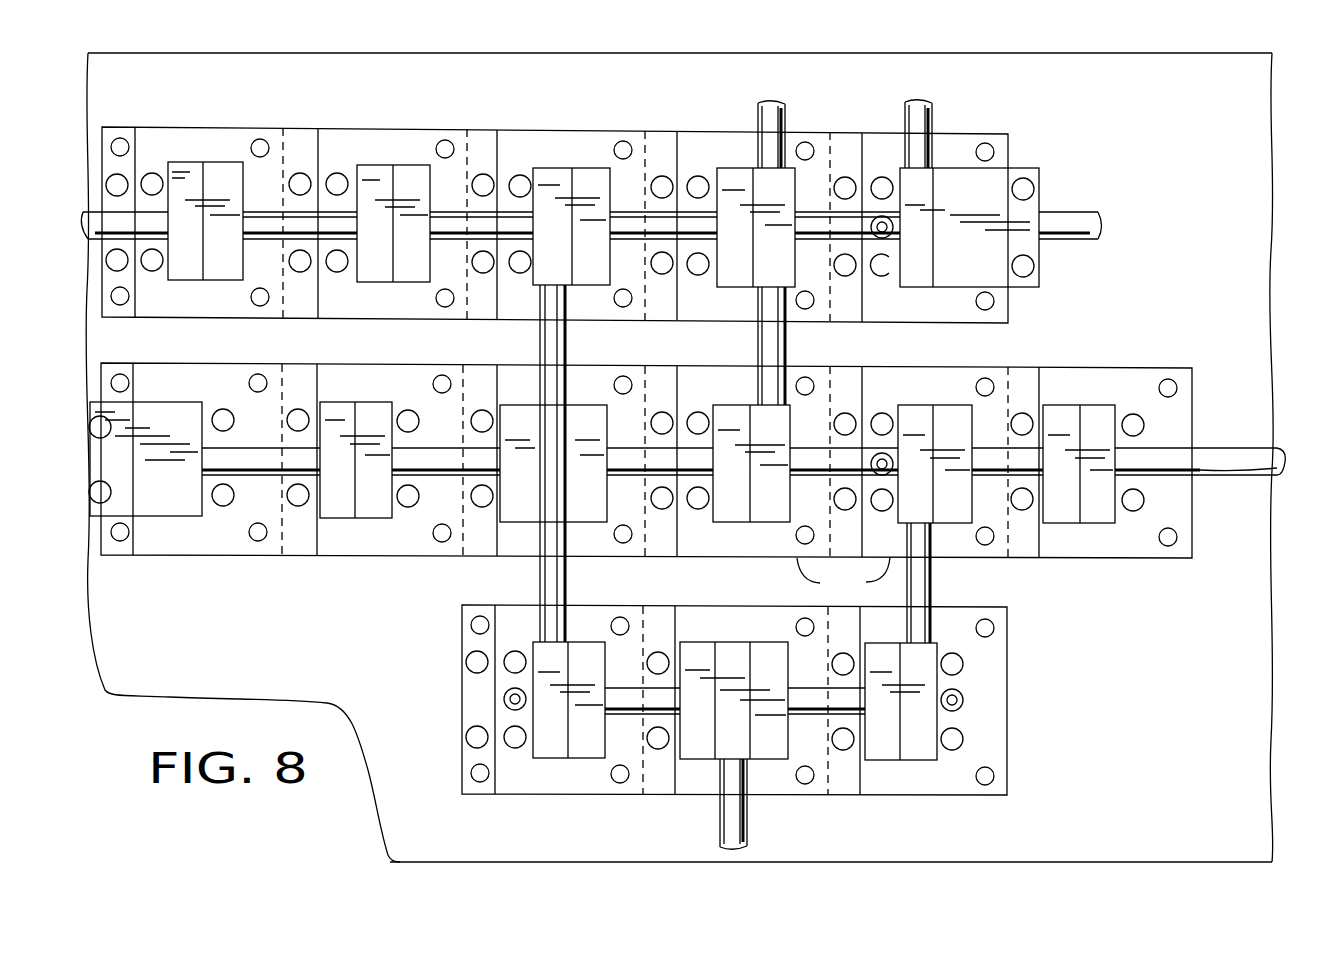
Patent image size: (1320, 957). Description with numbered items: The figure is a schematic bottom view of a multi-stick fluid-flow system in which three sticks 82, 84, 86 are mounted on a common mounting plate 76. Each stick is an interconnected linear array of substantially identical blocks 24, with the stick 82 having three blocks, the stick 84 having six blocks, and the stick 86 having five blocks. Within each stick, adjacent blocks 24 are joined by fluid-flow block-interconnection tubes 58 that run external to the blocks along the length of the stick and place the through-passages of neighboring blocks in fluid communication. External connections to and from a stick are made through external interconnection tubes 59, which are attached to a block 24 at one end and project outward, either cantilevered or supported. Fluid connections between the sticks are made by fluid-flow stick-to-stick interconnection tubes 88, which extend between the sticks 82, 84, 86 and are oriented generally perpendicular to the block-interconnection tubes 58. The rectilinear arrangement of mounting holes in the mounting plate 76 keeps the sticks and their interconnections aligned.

The first-stick blocks 24 is at (843, 576).
The fluid-flow block-interconnection tube 58 is at (624, 210).
The external interconnection tube 59 is at (125, 213).
The mounting plate 76 is at (1252, 126).
The stick 82 is at (649, 798).
The stick 84 is at (371, 555).
The stick 86 is at (374, 126).
The fluid-flow stick-to-stick interconnection tube 88 is at (572, 348).